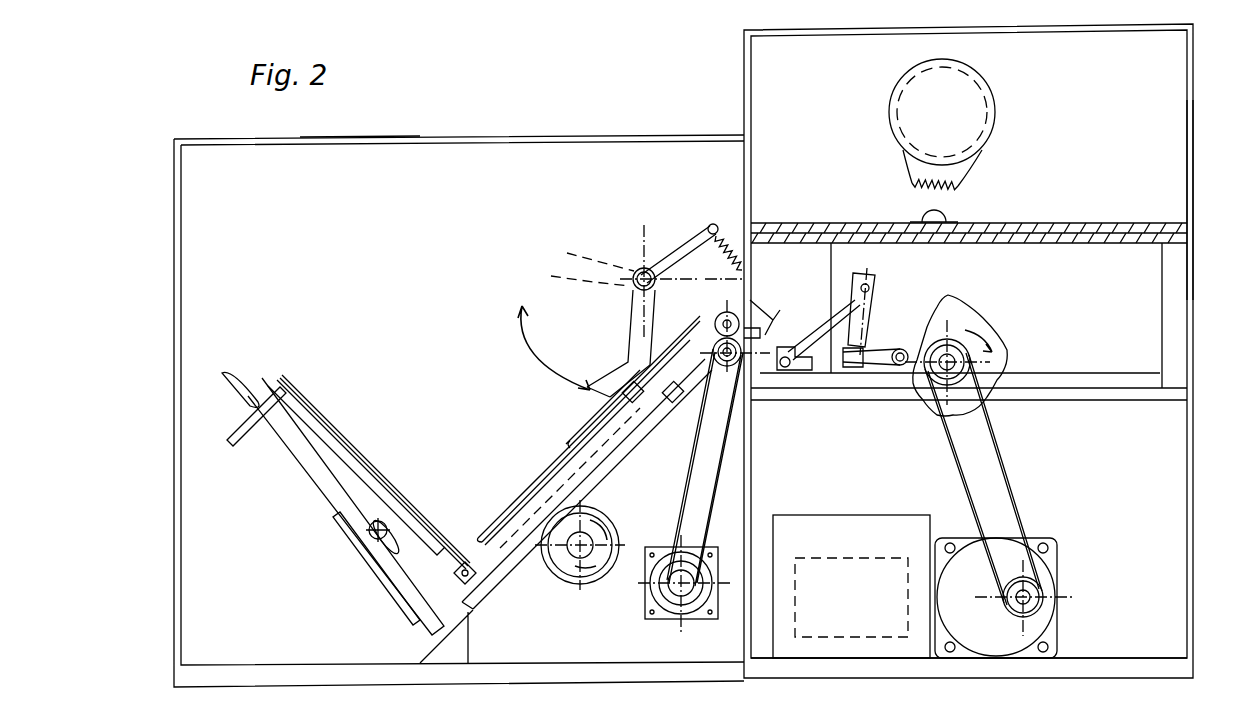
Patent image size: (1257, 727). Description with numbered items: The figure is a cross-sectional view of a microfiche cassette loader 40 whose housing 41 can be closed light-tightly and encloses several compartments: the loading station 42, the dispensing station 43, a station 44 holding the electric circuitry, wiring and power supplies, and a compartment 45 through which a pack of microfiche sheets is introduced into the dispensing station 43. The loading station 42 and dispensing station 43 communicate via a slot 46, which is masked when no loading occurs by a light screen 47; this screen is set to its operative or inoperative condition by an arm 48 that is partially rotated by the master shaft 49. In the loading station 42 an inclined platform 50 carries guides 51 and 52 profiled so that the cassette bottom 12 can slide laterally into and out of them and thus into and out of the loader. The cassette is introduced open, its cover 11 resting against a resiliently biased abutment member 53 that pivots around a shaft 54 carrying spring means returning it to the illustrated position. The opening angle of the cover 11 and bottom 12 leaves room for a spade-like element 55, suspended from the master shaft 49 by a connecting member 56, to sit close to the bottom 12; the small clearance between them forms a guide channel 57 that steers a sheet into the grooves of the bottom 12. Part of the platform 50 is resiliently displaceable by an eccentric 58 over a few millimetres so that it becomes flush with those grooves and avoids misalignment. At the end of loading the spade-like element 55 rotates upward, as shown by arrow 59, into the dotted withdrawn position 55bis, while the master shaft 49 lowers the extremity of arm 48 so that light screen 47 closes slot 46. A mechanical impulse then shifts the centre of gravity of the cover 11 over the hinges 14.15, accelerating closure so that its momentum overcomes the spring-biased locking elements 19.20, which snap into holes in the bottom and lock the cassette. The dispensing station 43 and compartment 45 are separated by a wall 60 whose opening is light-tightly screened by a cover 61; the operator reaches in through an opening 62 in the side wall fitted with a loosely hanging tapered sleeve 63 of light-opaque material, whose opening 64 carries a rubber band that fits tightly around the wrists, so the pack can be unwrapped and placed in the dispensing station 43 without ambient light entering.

The microfiche cassette loader 40 is at (675, 92).
The housing 41 is at (330, 139).
The loading station 42 is at (174, 216).
The dispensing station 43 is at (1162, 300).
The station 44 is at (1165, 524).
The compartment 45 is at (1165, 148).
The slot 46 is at (765, 335).
The light screen 47 is at (733, 294).
The arm 48 is at (687, 247).
The master shaft 49 is at (636, 268).
The inclined platform 50 is at (500, 577).
The guide 51 is at (472, 618).
The guide 52 is at (678, 400).
The abutment member 53 is at (305, 457).
The shaft 54 is at (370, 540).
The spade-like element 55 is at (545, 473).
The withdrawn position 55bis is at (565, 252).
The connecting member 56 is at (630, 322).
The guide channel 57 is at (507, 520).
The eccentric 58 is at (600, 532).
The arrow 59 is at (526, 352).
The wall 60 is at (1075, 222).
The cover 61 is at (985, 225).
The opening 62 is at (975, 112).
The tapered sleeve 63 is at (958, 168).
The opening 64 is at (955, 186).
The cover 11 is at (380, 470).
The bottom 12 is at (645, 396).
The spring-biased locking elements 19.20 is at (345, 382).
The hinges 14.15 is at (412, 592).